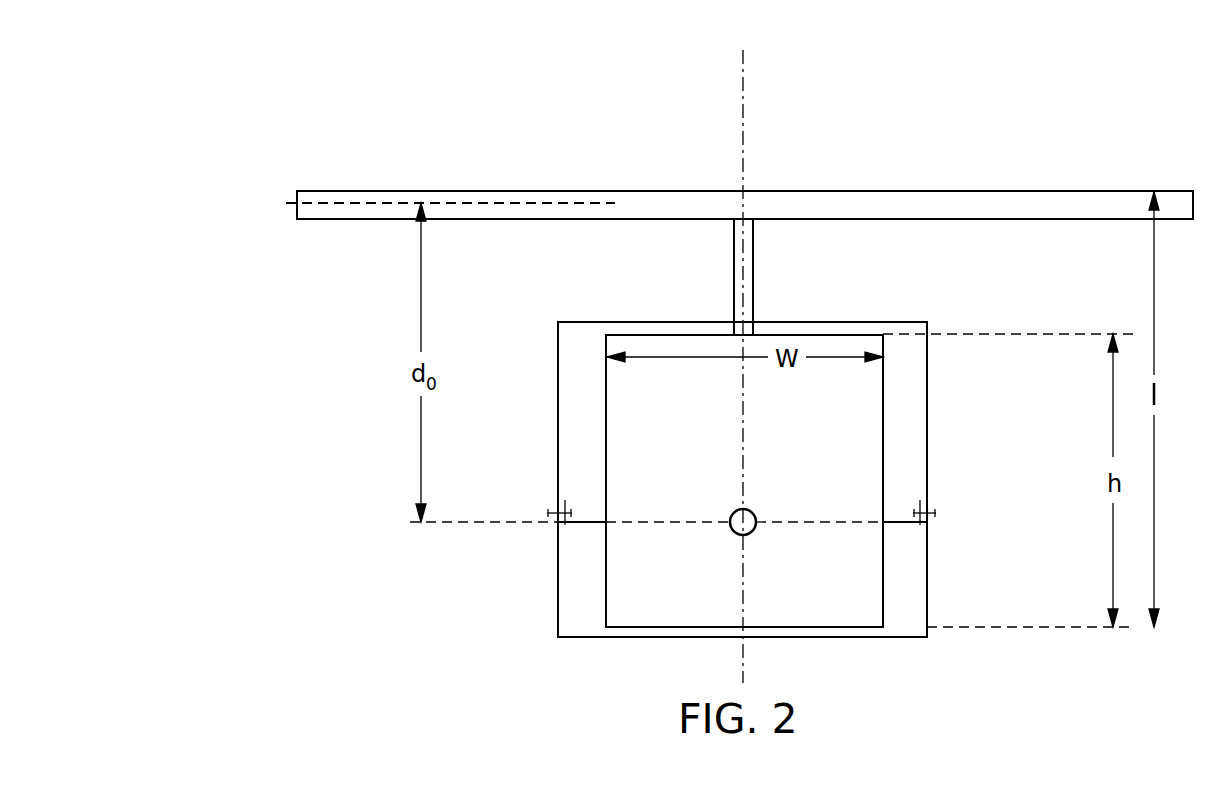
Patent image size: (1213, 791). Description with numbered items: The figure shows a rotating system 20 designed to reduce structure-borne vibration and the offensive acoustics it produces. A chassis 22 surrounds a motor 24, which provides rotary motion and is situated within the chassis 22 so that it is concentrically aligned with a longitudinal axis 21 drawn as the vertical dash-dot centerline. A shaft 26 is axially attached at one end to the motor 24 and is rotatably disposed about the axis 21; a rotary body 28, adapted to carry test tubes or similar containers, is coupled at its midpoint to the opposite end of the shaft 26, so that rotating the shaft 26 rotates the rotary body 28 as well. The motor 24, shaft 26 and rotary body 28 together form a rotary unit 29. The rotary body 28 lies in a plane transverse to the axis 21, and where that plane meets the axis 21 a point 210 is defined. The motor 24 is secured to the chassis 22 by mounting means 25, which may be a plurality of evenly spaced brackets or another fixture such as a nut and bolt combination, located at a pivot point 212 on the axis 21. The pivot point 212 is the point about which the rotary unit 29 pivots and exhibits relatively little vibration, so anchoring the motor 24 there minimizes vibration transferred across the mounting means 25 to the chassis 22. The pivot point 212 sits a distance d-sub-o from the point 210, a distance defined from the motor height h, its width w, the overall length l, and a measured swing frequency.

The rotating system 20 is at (707, 389).
The longitudinal axis 21 is at (741, 353).
The chassis 22 is at (557, 561).
The motor 24 is at (605, 411).
The mounting means 25 is at (937, 513).
The shaft 26 is at (754, 257).
The rotary body 28 is at (1082, 191).
The rotary unit 29 is at (728, 318).
The point 210 is at (746, 217).
The pivot point 212 is at (752, 511).